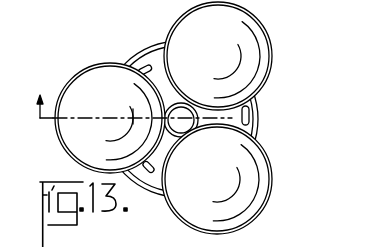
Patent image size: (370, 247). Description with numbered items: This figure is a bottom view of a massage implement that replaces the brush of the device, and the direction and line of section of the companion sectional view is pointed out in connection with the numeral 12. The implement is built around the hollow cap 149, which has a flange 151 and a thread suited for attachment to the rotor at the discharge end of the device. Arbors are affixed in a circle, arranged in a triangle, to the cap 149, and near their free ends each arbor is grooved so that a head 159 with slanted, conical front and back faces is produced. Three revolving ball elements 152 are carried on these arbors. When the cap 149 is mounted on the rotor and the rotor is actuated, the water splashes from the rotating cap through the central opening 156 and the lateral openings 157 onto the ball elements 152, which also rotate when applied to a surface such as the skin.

The direction and line of section 12 is at (131, 100).
The hollow cap 149 is at (258, 117).
The flange 151 is at (165, 195).
The ball elements 152 is at (163, 118).
The central opening 156 is at (181, 120).
The lateral openings 157 is at (253, 102).
The head 159 is at (83, 0).